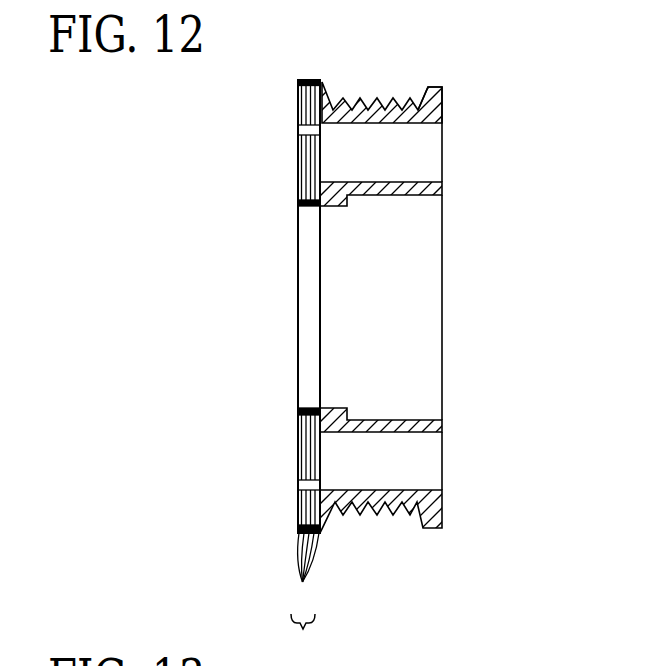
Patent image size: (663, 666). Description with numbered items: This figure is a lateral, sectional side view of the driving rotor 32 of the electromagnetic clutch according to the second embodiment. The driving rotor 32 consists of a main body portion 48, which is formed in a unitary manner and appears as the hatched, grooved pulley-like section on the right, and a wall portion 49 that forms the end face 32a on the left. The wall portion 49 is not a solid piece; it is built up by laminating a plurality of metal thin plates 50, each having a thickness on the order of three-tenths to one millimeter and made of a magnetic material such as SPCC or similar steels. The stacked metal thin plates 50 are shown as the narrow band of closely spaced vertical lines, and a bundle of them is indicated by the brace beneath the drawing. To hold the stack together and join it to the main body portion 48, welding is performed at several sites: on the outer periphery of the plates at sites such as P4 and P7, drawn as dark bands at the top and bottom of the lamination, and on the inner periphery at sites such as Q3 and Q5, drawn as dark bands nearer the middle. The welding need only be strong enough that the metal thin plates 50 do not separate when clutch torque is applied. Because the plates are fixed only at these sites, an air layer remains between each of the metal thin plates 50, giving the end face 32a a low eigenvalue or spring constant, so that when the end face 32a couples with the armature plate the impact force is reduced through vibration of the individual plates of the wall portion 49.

The driving rotor 32 is at (409, 91).
The end face 32a is at (298, 182).
The main body portion 48 is at (437, 107).
The wall portion 49 is at (305, 640).
The metal thin plates 50 is at (307, 574).
The welding site P4 is at (313, 80).
The welding site P7 is at (298, 532).
The welding site Q3 is at (308, 208).
The welding site Q5 is at (307, 406).